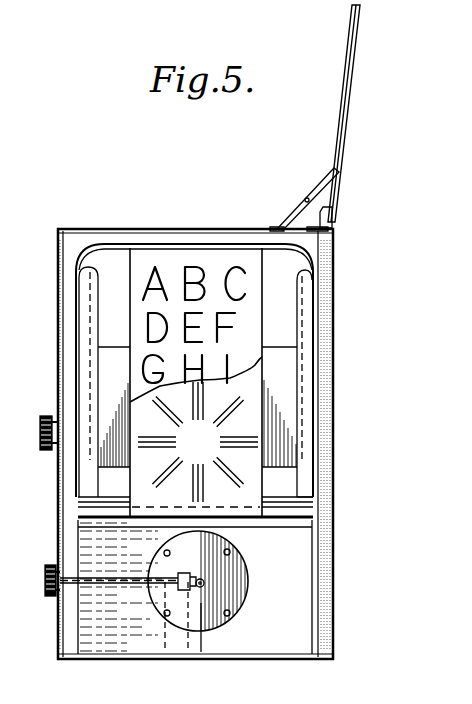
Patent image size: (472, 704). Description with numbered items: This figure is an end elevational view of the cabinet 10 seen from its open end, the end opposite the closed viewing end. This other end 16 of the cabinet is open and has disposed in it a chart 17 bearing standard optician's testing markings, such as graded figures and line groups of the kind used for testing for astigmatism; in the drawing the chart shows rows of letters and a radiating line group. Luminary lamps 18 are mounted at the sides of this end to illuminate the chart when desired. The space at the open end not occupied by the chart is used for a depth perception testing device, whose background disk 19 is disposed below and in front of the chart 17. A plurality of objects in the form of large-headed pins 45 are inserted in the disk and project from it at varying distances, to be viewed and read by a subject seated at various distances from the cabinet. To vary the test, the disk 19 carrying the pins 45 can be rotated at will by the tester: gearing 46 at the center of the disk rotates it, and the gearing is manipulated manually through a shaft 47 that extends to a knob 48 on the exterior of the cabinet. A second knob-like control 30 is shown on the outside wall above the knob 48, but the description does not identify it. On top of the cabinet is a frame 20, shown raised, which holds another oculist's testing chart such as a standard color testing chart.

The cabinet 10 is at (339, 439).
The other end of the cabinet 16 is at (303, 256).
The chart 17 is at (240, 337).
The luminary lamp 18 is at (308, 392).
The background disk 19 is at (243, 553).
The frame 20 is at (345, 127).
The adjusting knob 30 is at (38, 432).
The large-headed pin 45 is at (235, 613).
The gearing 46 is at (187, 574).
The shaft 47 is at (104, 586).
The knob 48 is at (45, 589).